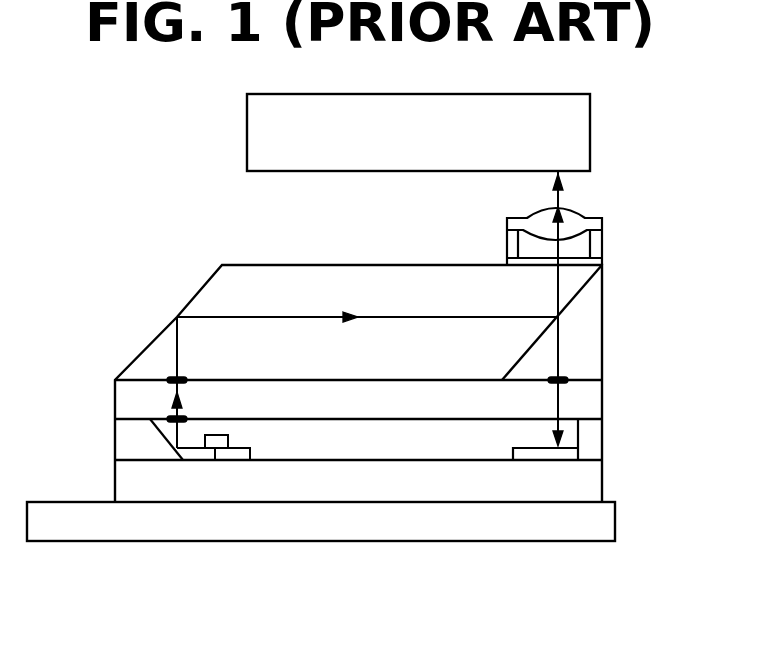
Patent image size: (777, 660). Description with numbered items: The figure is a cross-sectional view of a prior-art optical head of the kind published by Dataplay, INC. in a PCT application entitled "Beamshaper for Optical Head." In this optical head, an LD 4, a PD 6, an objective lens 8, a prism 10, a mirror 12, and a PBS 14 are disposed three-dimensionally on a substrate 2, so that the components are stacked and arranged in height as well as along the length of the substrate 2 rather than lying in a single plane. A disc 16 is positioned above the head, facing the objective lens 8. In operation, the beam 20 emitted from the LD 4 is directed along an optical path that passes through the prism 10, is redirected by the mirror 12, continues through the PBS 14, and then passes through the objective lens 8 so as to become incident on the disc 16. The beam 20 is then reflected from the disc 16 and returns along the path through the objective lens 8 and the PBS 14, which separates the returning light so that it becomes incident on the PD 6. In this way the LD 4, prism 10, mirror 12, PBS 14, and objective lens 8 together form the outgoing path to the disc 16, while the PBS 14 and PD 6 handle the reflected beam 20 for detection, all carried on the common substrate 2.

The substrate 2 is at (602, 524).
The LD 4 is at (232, 455).
The PD 6 is at (547, 455).
The objective lens 8 is at (570, 218).
The prism 10 is at (173, 452).
The mirror 12 is at (150, 344).
The PBS 14 is at (583, 290).
The disc 16 is at (423, 94).
The beam 20 is at (301, 317).